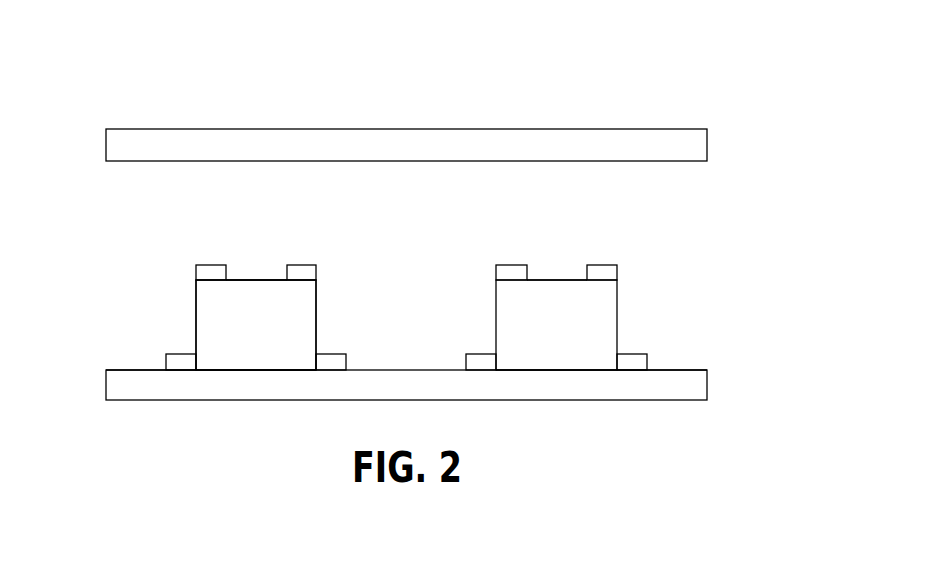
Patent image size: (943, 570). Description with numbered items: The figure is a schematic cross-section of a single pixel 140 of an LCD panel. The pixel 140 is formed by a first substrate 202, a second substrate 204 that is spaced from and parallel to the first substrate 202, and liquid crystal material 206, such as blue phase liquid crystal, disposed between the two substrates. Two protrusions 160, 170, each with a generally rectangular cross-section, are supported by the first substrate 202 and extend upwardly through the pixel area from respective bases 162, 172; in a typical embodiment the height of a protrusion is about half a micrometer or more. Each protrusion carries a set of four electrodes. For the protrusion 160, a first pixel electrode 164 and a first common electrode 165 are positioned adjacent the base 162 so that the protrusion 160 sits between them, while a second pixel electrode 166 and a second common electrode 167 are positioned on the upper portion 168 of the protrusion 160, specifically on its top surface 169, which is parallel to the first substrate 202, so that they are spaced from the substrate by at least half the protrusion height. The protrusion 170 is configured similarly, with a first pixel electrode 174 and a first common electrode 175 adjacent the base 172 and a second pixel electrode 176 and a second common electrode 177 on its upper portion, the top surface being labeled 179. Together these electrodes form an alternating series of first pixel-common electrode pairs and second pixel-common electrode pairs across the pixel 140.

The pixel 140 is at (733, 106).
The second substrate 204 is at (137, 161).
The liquid crystal material 206 is at (696, 235).
The first substrate 202 is at (123, 370).
The base 162 is at (258, 370).
The base 172 is at (557, 370).
The protrusion 160 is at (272, 335).
The upper portion 168 is at (178, 297).
The top surface 169 is at (233, 280).
The second pixel electrode 166 is at (212, 263).
The second common electrode 167 is at (302, 265).
The first pixel electrode 164 is at (183, 354).
The first common electrode 165 is at (330, 354).
The protrusion 170 is at (572, 335).
The top surface of second component 179 is at (535, 280).
The second pixel electrode 176 is at (510, 263).
The second common electrode 177 is at (603, 265).
The first pixel electrode 174 is at (482, 354).
The first common electrode 175 is at (632, 354).